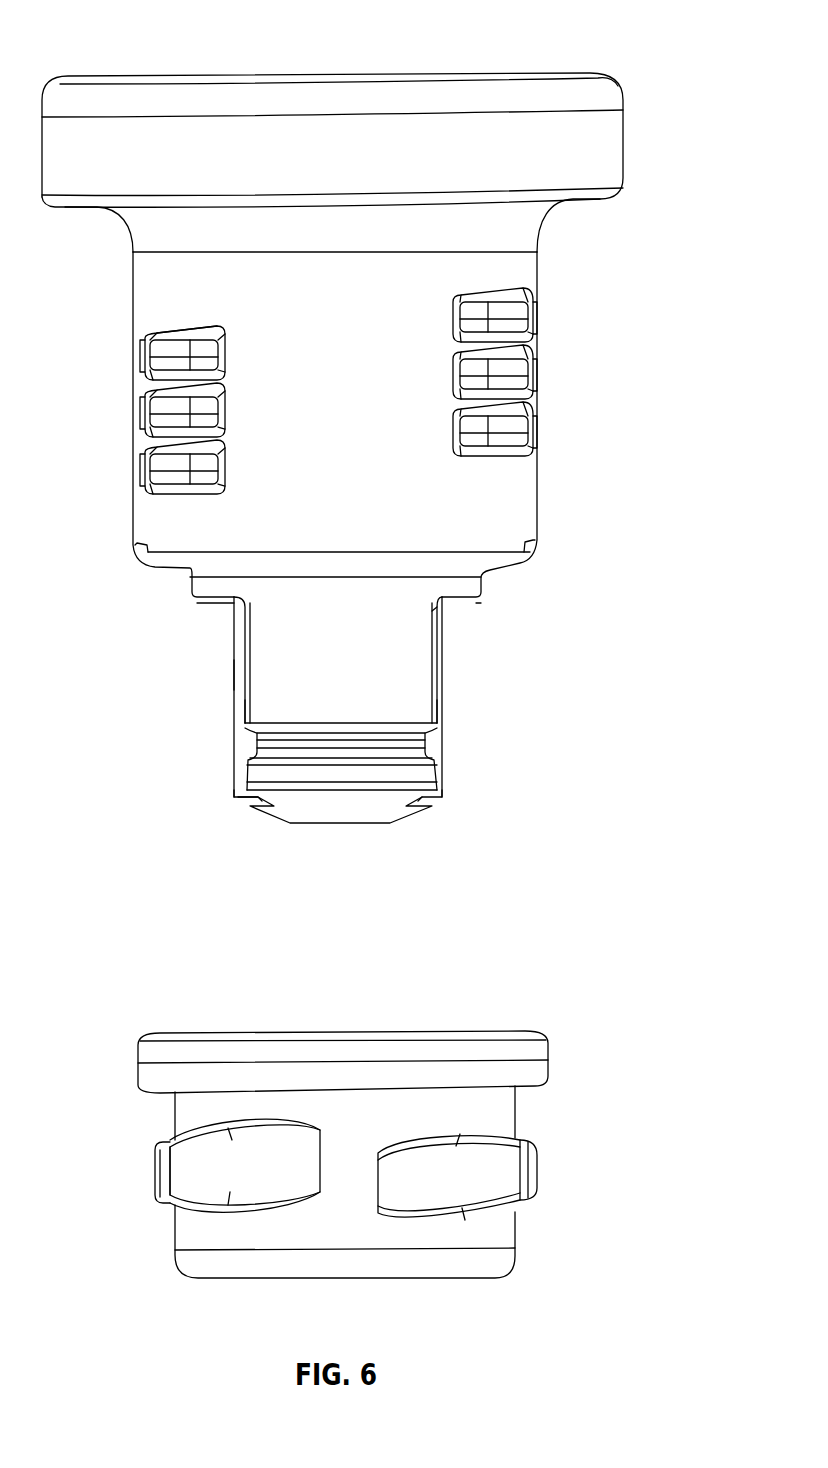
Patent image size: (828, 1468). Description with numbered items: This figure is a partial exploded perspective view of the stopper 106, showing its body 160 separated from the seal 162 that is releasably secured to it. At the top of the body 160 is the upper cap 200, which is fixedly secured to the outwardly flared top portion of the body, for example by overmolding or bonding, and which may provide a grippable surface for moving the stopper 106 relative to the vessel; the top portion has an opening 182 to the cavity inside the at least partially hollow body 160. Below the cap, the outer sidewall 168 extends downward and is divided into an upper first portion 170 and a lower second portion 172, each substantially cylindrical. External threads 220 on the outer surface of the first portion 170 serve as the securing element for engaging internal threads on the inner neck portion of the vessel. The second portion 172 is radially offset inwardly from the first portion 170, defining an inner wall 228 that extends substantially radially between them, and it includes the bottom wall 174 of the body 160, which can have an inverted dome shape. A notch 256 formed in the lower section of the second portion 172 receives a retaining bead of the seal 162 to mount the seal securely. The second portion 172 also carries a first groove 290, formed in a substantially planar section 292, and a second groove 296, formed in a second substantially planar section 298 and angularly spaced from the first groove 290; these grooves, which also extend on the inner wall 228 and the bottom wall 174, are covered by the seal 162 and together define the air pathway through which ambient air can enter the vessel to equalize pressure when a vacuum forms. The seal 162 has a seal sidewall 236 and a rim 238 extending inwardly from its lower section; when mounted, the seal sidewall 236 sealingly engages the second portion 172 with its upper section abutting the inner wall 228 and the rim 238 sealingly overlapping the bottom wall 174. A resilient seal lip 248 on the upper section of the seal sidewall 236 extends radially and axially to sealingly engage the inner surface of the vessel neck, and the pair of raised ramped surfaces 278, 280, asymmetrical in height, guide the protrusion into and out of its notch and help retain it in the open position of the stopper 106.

The stopper 106 is at (611, 45).
The upper cap 200 is at (623, 148).
The opening 182 is at (330, 333).
The outer sidewall 168 is at (160, 313).
The external threads 220 is at (142, 408).
The first portion 170 is at (160, 513).
The body 160 is at (525, 484).
The inner wall 228 is at (222, 600).
The second substantially planar section 298 is at (443, 641).
The second portion 172 is at (415, 648).
The substantially planar section 292 is at (233, 672).
The groove 290 is at (235, 712).
The second groove 296 is at (442, 712).
The notch 256 is at (344, 752).
The bottom wall 174 is at (373, 825).
The seal lip 248 is at (540, 1050).
The seal sidewall 236 is at (505, 1118).
The raised ramped surface 278 is at (520, 1172).
The raised ramped surface 280 is at (170, 1168).
The seal 162 is at (190, 1228).
The rim 238 is at (335, 1270).